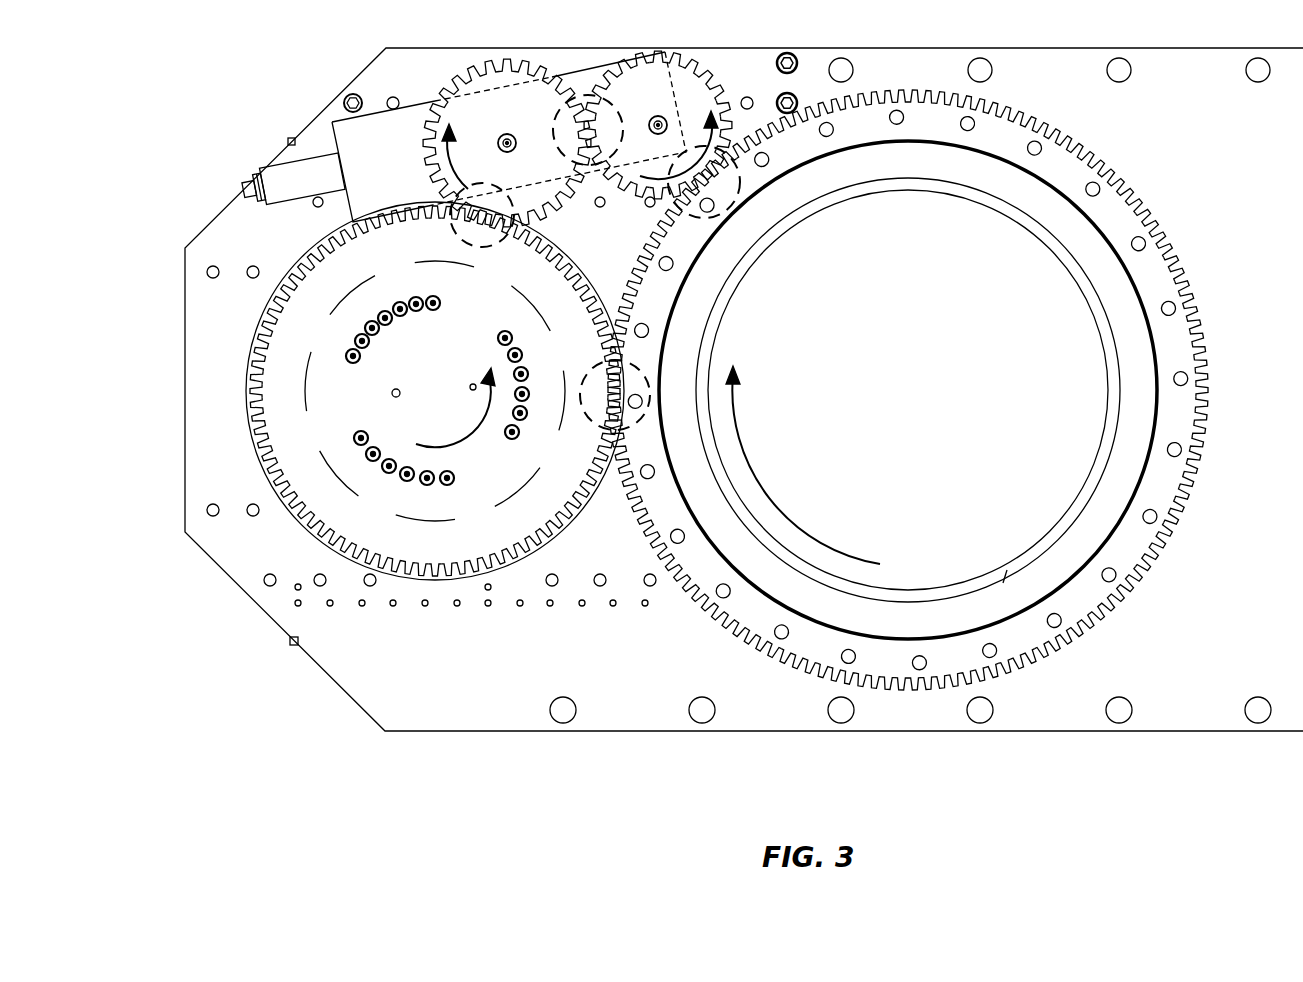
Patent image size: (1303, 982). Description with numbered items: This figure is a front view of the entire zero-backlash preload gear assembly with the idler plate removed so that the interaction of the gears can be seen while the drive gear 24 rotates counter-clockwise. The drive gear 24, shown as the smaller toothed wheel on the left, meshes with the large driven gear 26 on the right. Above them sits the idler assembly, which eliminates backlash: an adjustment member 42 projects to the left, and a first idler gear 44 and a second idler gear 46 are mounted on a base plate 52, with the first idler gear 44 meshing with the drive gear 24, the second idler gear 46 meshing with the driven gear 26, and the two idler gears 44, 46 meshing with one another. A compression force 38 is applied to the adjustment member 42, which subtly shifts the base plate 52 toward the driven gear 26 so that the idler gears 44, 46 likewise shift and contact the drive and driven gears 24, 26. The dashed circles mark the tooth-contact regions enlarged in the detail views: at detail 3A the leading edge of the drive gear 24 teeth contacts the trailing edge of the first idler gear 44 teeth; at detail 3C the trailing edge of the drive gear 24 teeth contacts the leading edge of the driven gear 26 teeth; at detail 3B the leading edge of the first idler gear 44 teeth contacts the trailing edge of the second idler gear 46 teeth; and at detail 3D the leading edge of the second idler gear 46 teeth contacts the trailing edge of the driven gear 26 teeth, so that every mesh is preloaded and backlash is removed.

The drive gear 24 is at (322, 508).
The driven gear 26 is at (1133, 227).
The compression force 38 is at (232, 193).
The adjustment member 42 is at (289, 166).
The first idler gear 44 is at (490, 83).
The second idler gear 46 is at (633, 92).
The base plate 52 is at (373, 110).
The detail view 3A is at (523, 217).
The detail view 3B is at (722, 148).
The detail view 3C is at (643, 377).
The detail view 3D is at (557, 127).